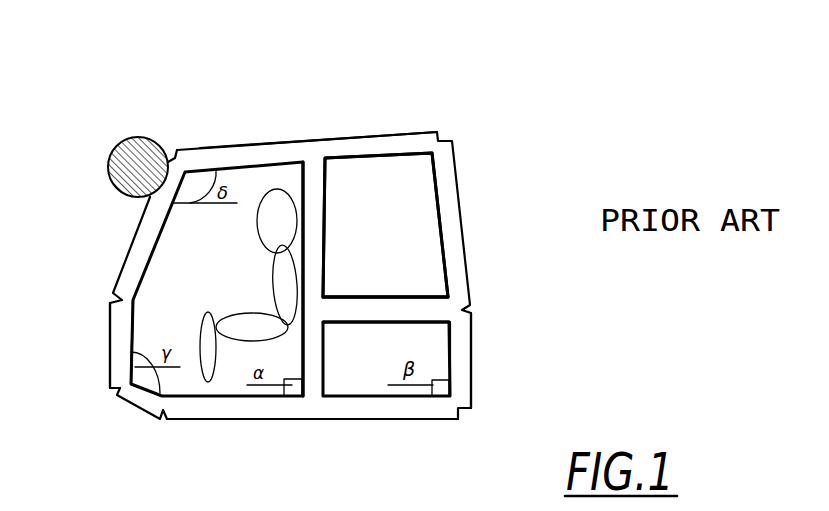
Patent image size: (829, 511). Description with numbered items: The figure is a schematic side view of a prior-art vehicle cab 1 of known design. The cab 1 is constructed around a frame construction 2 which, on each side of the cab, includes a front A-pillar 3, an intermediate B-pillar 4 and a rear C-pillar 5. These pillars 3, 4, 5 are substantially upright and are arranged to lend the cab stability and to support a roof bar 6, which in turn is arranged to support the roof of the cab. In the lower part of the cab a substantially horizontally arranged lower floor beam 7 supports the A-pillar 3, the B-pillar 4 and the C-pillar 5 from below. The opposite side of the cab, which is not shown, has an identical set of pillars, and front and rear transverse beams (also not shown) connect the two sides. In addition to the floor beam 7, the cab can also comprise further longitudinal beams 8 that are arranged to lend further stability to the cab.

The cab 1 is at (178, 103).
The frame construction 2 is at (423, 119).
The front A-pillar 3 is at (117, 368).
The intermediate B-pillar 4 is at (313, 255).
The rear C-pillar 5 is at (463, 367).
The roof bar 6 is at (335, 143).
The lower floor beam 7 is at (406, 412).
The longitudinal beams 8 is at (387, 303).